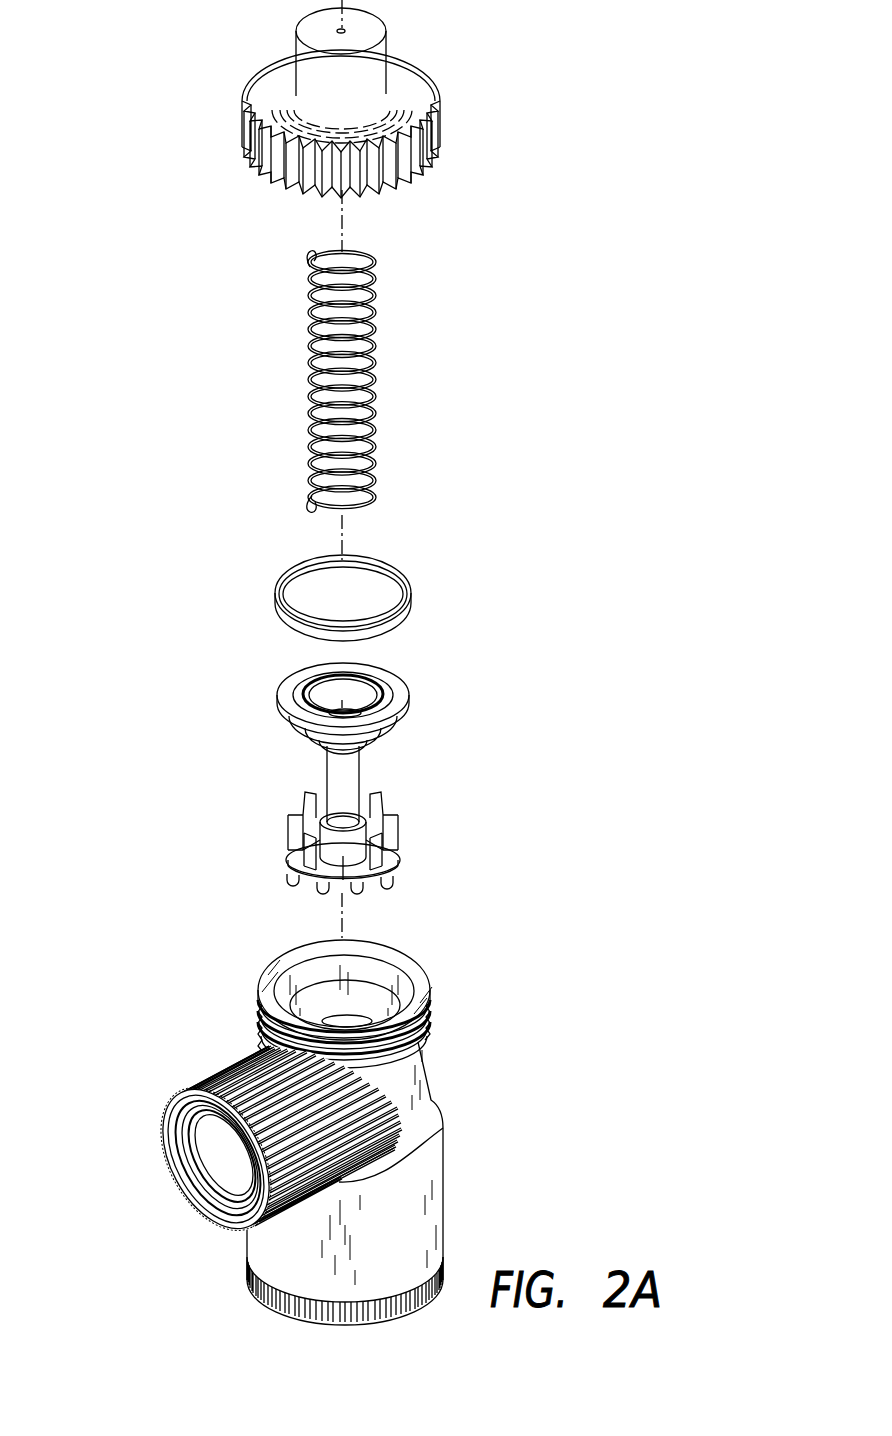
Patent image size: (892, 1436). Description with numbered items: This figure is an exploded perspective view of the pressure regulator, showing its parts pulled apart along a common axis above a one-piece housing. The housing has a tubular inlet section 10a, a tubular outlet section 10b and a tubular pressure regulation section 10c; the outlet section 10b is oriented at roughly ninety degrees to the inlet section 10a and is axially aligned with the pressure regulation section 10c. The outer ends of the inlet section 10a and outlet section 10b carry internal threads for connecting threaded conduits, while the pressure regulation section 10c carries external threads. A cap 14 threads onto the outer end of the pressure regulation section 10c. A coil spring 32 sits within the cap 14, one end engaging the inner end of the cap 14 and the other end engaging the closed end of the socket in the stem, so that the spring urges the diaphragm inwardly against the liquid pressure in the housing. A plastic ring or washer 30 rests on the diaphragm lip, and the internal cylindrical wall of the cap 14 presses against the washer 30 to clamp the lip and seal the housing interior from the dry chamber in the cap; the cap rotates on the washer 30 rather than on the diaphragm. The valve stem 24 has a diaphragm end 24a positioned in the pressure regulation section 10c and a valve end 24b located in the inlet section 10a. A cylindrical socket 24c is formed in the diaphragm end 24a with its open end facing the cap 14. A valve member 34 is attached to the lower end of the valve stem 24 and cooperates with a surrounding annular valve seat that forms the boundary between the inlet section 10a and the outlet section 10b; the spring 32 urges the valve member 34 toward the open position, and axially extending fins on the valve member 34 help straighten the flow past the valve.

The cap 14 is at (448, 88).
The coil spring 32 is at (378, 392).
The washer 30 is at (398, 595).
The valve stem 24 is at (380, 729).
The diaphragm end 24a is at (387, 702).
The valve end 24b is at (327, 782).
The cylindrical socket 24c is at (355, 692).
The valve member 34 is at (410, 853).
The inlet section 10a is at (156, 1100).
The outlet section 10b is at (455, 1223).
The pressure regulation section 10c is at (423, 951).